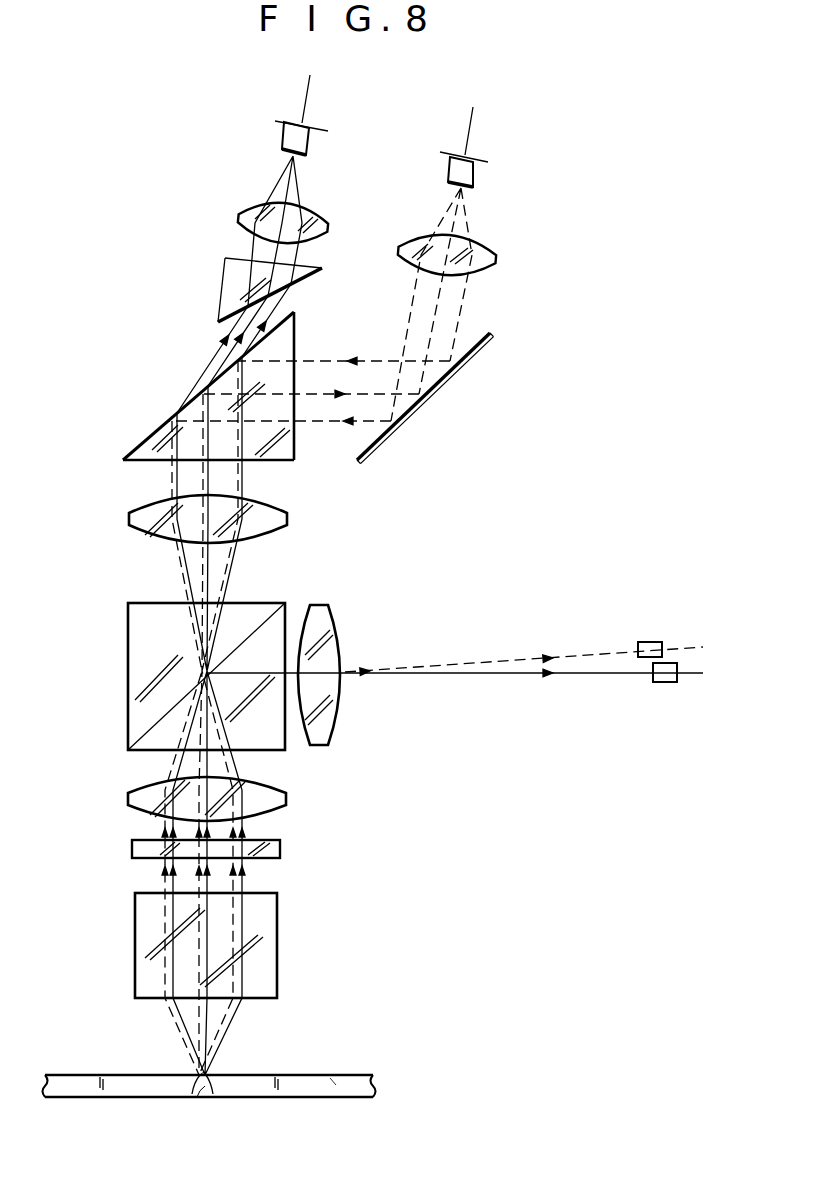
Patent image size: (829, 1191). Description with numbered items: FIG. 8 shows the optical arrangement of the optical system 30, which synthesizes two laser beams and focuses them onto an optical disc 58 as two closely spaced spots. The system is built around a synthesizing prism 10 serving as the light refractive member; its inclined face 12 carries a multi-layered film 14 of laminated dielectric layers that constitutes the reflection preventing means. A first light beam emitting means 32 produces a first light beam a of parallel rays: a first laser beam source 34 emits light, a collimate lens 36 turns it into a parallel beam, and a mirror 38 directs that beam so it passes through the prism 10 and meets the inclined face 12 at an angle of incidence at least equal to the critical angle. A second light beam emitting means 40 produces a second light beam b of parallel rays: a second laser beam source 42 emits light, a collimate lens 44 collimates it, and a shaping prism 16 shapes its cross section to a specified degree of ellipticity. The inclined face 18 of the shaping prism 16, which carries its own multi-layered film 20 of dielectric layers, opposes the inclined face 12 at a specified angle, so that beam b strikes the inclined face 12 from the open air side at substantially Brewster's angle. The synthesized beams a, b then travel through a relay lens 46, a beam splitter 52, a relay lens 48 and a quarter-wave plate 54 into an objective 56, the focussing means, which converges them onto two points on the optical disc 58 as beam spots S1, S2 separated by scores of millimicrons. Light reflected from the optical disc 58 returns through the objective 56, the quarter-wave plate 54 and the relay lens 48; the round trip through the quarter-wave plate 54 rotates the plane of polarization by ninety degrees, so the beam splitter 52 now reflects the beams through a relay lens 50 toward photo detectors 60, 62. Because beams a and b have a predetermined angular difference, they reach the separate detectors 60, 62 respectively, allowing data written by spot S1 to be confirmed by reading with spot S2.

The synthesizing prism 10 is at (284, 446).
The inclined face 12 is at (150, 457).
The multi-layered film 14 is at (161, 432).
The shaping prism 16 is at (230, 271).
The inclined face 18 is at (229, 313).
The multi-layered film 20 is at (306, 281).
The optical system 30 is at (125, 274).
The first light beam emitting means 32 is at (522, 338).
The first laser beam source 34 is at (477, 171).
The collimate lens 36 is at (493, 263).
The mirror 38 is at (477, 357).
The second light beam emitting means 40 is at (232, 194).
The second laser beam source 42 is at (315, 141).
The collimate lens 44 is at (323, 220).
The relay lens 46 is at (289, 518).
The relay lens 48 is at (288, 796).
The relay lens 50 is at (326, 622).
The beam splitter 52 is at (130, 642).
The λ/4 plate 54 is at (134, 849).
The objective 56 is at (279, 940).
The optical disc 58 is at (333, 1083).
The photo detector 60 is at (648, 641).
The photo detector 62 is at (665, 683).
The first light beam a is at (336, 352).
The second light beam b is at (194, 359).
The beam spot S1 is at (197, 1087).
The beam spot S2 is at (209, 1087).